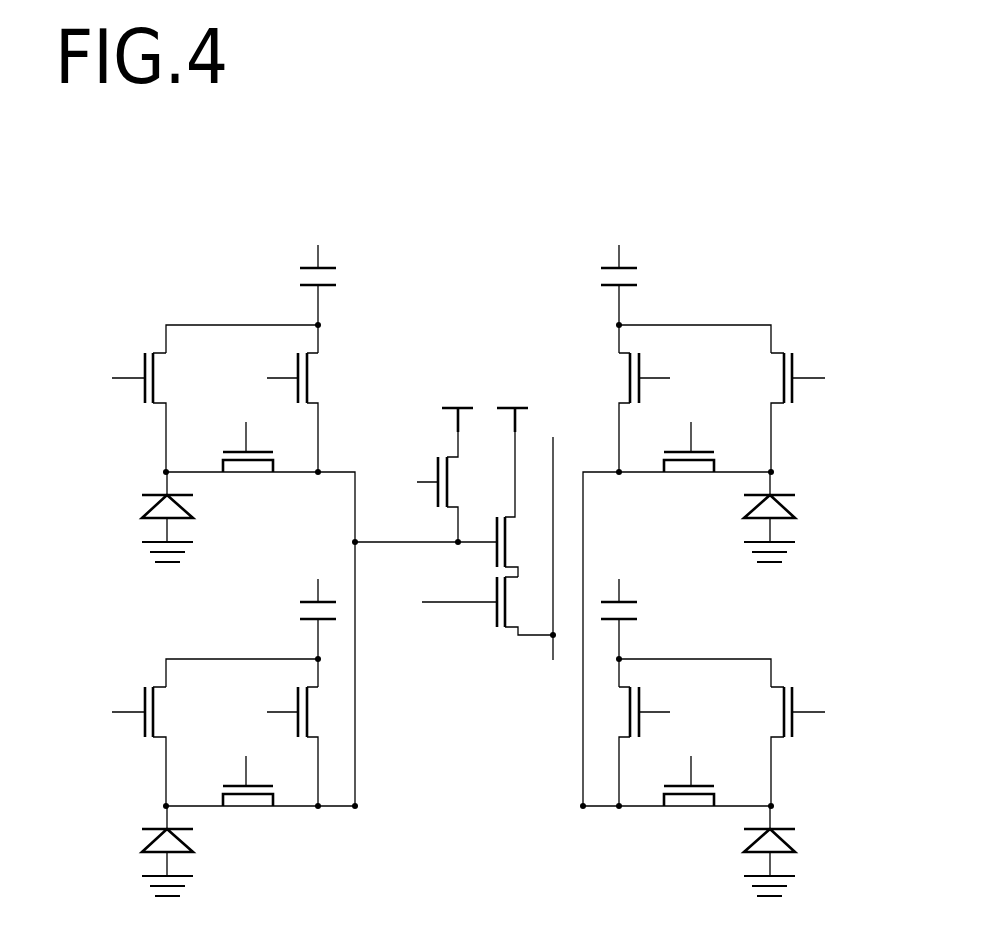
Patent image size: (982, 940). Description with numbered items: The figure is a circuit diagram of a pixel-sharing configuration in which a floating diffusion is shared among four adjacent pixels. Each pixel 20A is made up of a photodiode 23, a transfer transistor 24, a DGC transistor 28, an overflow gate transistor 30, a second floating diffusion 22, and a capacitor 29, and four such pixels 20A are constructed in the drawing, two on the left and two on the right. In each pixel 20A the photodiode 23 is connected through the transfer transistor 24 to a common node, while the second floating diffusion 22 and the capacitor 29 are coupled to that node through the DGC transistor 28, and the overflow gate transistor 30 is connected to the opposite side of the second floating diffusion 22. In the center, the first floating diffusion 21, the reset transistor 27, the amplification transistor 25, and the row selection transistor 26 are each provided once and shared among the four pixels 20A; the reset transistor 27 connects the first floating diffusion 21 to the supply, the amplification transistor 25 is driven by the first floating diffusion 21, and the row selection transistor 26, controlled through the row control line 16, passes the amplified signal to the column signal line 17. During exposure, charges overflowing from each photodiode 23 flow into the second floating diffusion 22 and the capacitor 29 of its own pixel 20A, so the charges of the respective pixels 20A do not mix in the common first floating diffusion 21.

The pixel 20A is at (215, 233).
The second floating diffusion 22 is at (197, 290).
The photodiode 23 is at (145, 507).
The transfer transistor 24 is at (245, 448).
The amplification transistor 25 is at (495, 518).
The row selection transistor 26 is at (496, 615).
The reset transistor 27 is at (438, 460).
The DGC transistor 28 is at (297, 352).
The capacitor 29 is at (302, 267).
The overflow gate transistor 30 is at (143, 352).
The row control line 16 is at (427, 605).
The column signal line 17 is at (553, 457).
The first floating diffusion 21 is at (452, 575).